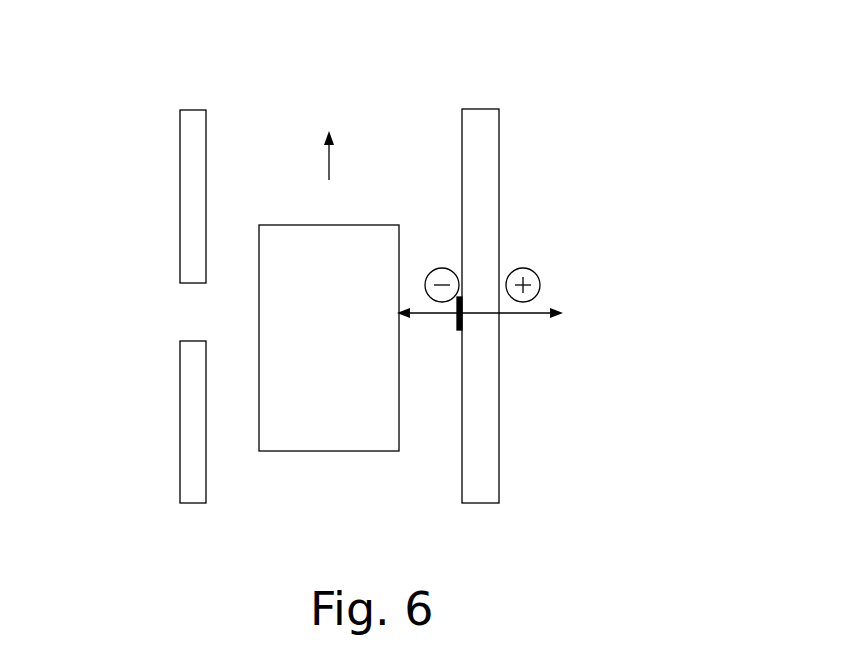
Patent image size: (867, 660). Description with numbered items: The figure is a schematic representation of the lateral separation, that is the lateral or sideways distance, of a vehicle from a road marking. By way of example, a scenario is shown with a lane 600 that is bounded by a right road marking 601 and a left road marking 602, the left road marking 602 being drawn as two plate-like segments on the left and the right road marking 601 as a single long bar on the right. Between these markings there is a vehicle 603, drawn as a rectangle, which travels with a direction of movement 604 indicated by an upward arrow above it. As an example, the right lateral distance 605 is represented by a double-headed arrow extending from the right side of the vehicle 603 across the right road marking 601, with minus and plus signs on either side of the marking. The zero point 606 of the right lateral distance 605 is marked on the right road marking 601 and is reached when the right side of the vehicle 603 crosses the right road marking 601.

The lane 600 is at (403, 110).
The right road marking 601 is at (485, 443).
The left road marking 602 is at (195, 403).
The vehicle 603 is at (342, 435).
The direction of movement 604 is at (316, 156).
The right lateral distance 605 is at (523, 316).
The zero point 606 is at (455, 322).